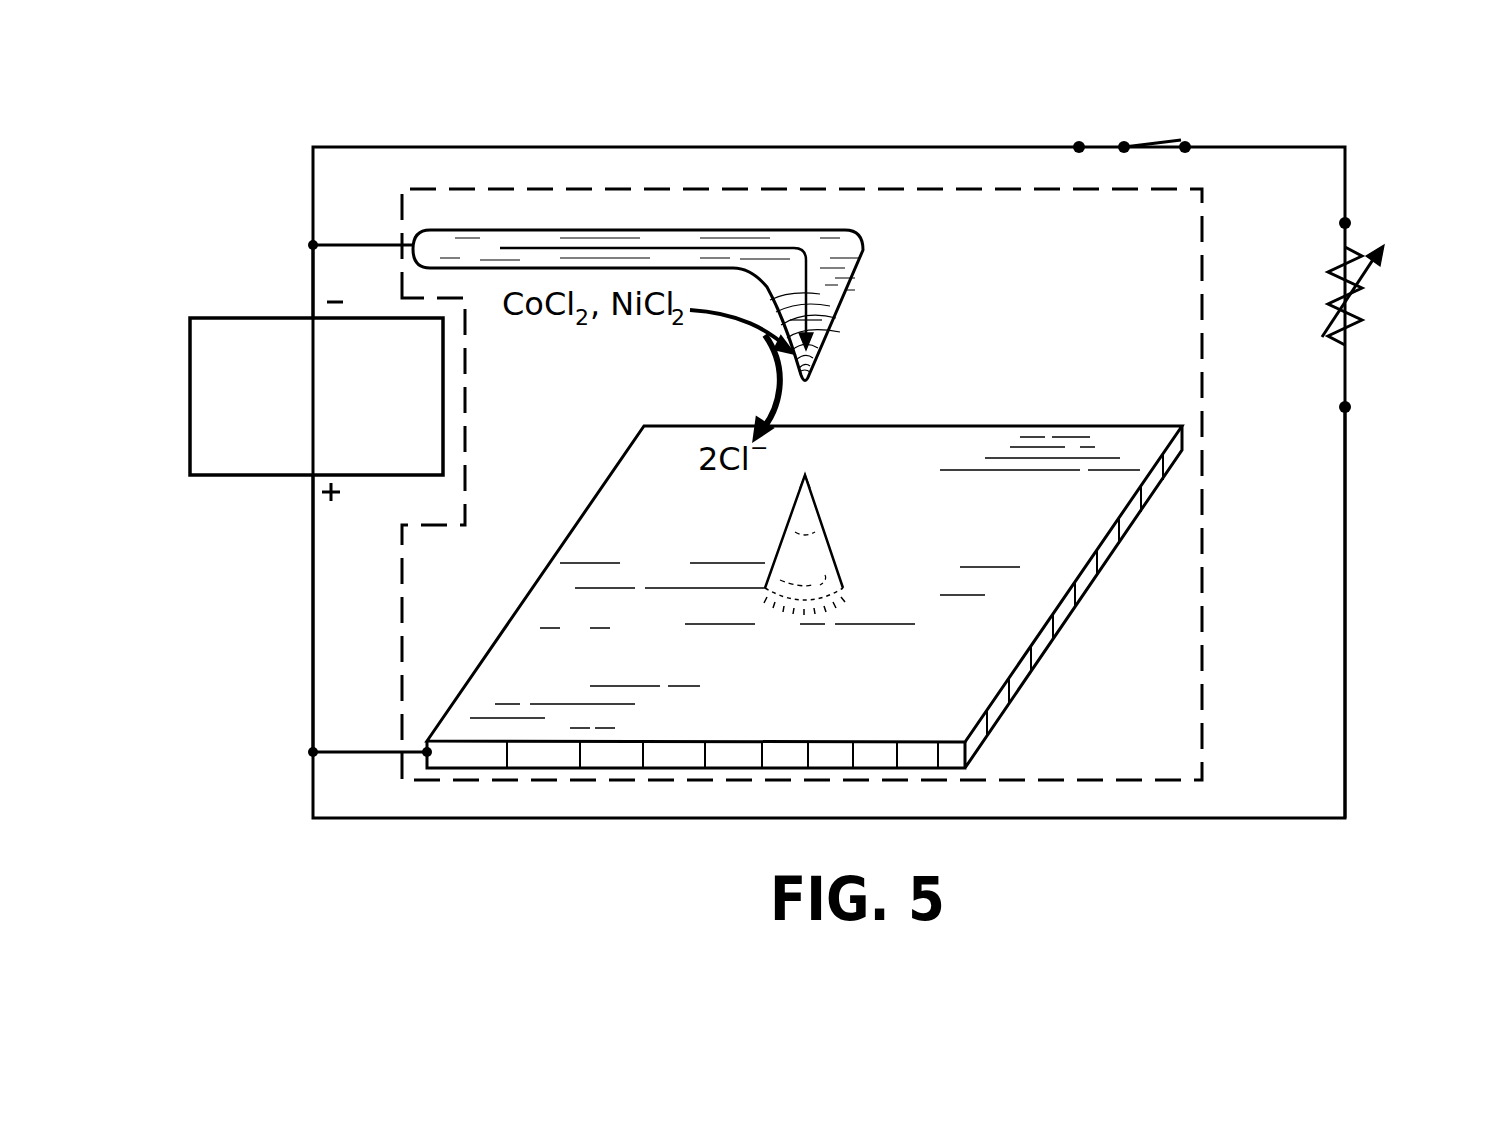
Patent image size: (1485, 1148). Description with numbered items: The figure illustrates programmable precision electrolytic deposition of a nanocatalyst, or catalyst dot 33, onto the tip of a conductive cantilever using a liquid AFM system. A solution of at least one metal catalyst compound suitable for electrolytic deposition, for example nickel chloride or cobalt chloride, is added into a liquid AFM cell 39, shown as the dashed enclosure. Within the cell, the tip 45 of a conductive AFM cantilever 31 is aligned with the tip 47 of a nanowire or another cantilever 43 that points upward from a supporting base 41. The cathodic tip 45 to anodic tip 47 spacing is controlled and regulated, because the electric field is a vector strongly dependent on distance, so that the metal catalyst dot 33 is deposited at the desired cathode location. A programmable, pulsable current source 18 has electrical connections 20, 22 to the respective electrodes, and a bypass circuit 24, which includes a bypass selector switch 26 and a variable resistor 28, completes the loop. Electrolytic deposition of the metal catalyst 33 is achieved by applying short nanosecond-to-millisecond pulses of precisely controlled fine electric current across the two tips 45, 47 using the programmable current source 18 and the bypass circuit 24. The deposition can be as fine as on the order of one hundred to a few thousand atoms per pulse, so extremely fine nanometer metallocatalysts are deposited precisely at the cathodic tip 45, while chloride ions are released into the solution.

The programmable current source 18 is at (190, 445).
The electrical connection 20 is at (313, 612).
The electrical connection 22 is at (313, 278).
The bypass circuit 24 is at (1345, 592).
The bypass selector switch 26 is at (1158, 142).
The variable resistor 28 is at (1362, 325).
The conductive AFM cantilever 31 is at (707, 228).
The catalyst dot 33 is at (812, 364).
The liquid AFM cell 39 is at (1202, 638).
The substrate 41 is at (1040, 664).
The nanowire or another cantilever 43 is at (818, 535).
The cathodic tip 45 is at (828, 318).
The anodic tip 47 is at (805, 475).